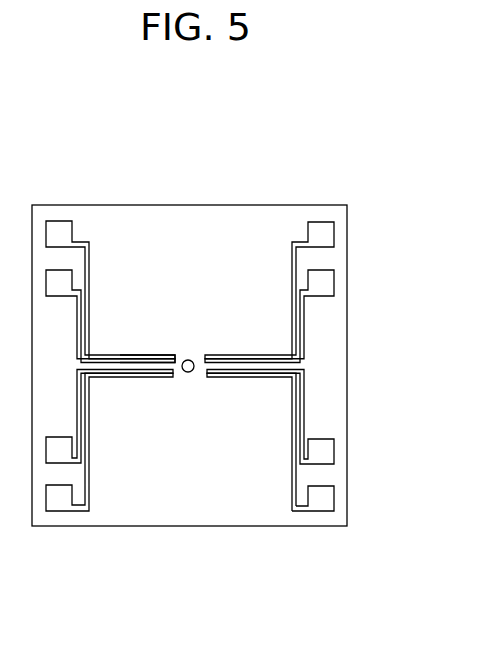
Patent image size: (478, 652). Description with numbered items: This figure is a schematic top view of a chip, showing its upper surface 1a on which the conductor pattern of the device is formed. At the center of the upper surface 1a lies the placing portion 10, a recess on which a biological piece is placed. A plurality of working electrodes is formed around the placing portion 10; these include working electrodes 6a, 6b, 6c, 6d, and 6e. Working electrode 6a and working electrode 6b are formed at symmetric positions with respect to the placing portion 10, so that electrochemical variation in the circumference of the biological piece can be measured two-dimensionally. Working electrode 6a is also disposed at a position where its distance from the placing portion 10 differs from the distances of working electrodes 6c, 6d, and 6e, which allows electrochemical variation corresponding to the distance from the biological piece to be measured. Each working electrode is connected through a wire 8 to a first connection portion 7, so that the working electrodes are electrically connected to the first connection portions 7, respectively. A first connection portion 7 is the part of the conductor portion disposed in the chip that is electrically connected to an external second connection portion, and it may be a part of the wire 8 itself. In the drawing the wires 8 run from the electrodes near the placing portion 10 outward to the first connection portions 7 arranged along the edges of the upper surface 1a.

The upper surface 1a is at (335, 355).
The working electrode 6a is at (178, 356).
The working electrode 6b is at (203, 362).
The working electrode 6c is at (165, 354).
The working electrode 6d is at (175, 362).
The working electrode 6e is at (168, 370).
The first connection portion 7 is at (320, 497).
The wire 8 is at (293, 428).
The placing portion 10 is at (186, 372).